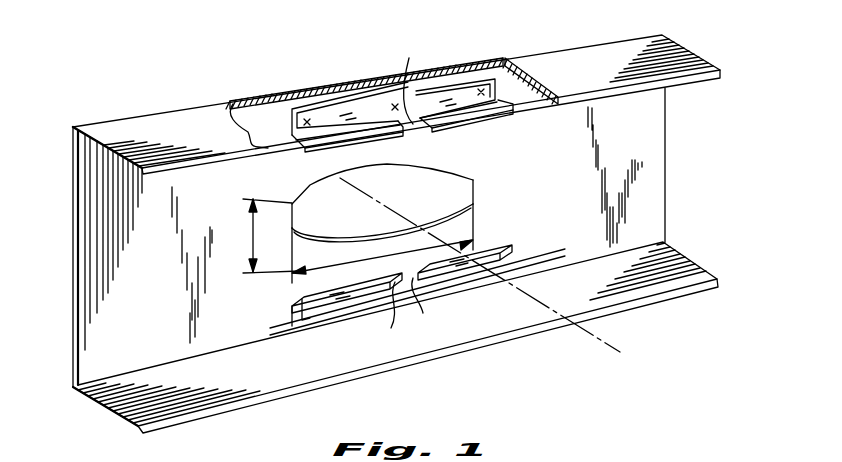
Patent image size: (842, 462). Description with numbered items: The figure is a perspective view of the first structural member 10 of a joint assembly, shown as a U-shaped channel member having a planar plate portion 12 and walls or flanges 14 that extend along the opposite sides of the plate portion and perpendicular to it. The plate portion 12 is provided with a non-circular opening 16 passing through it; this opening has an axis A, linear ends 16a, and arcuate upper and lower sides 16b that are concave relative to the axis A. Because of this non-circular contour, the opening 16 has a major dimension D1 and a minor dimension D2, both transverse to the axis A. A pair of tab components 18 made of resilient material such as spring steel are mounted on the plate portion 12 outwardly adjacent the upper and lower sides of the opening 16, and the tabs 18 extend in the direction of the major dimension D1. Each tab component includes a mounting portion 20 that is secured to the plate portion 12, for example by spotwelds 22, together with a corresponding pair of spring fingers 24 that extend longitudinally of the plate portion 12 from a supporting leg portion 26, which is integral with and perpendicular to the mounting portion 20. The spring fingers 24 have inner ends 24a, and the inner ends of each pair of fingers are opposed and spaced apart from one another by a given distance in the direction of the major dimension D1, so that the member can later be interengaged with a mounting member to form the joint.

The structural member 10 is at (676, 168).
The plate portion 12 is at (73, 266).
The flanges 14 is at (143, 128).
The non-circular opening 16 is at (411, 182).
The linear ends 16a is at (470, 207).
The arcuate upper and lower sides 16b is at (468, 179).
The tab components 18 is at (313, 105).
The mounting portion 20 is at (270, 114).
The spotwelds 22 is at (392, 106).
The spring fingers 24 is at (377, 140).
The inner ends 24a is at (413, 194).
The supporting leg portion 26 is at (313, 150).
The major dimension D1 is at (381, 257).
The minor dimension D2 is at (252, 236).
The axis A is at (593, 332).